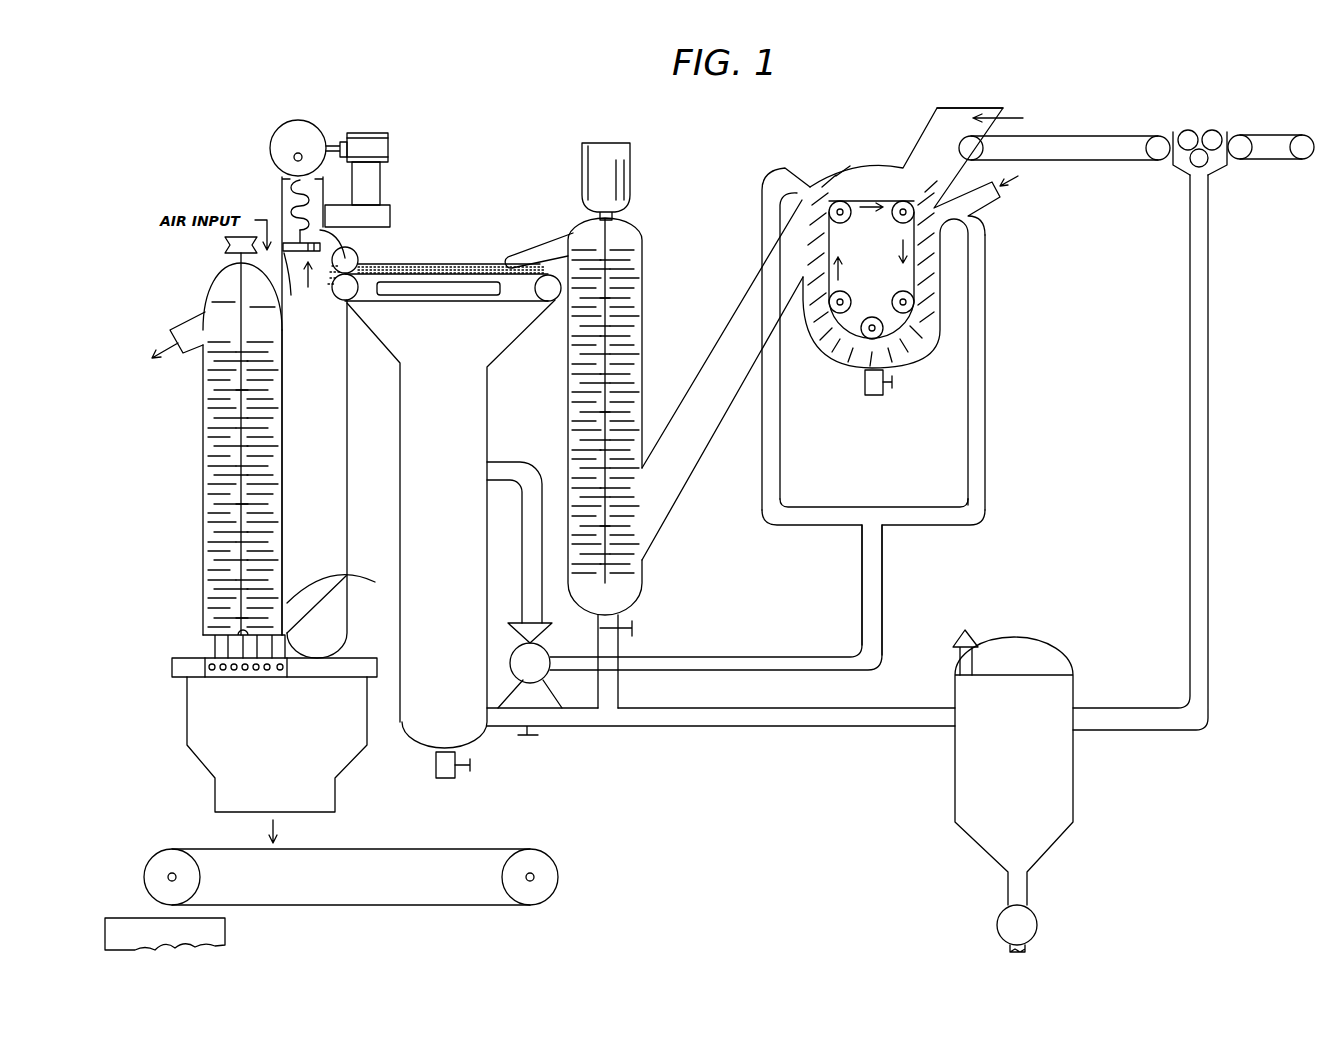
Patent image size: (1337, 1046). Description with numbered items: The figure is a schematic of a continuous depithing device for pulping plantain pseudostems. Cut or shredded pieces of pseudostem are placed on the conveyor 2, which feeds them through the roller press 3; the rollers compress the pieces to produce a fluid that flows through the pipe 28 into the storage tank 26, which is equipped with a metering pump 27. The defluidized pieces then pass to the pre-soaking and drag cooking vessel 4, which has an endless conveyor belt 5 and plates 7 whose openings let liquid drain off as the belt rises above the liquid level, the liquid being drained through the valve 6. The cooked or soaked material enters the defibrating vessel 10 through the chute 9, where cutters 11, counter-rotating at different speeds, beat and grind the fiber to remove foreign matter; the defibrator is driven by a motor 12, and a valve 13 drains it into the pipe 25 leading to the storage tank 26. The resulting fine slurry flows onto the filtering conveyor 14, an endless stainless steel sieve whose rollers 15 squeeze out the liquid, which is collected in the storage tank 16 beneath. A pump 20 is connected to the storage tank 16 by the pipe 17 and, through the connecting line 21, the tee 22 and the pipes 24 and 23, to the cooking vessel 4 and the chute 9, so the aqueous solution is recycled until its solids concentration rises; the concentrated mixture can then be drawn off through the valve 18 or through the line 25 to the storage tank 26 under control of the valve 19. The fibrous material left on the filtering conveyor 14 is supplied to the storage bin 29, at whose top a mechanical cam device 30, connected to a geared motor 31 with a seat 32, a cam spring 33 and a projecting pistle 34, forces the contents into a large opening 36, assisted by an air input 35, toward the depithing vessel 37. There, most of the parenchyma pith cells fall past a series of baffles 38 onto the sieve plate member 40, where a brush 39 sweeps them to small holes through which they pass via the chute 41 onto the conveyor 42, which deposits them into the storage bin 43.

The conveyor 2 is at (1267, 160).
The roller press 3 is at (1197, 130).
The pre-soaking and drag cooking vessel 4 is at (858, 166).
The endless conveyor belt 5 is at (828, 238).
The valve 6 is at (863, 380).
The plates 7 is at (840, 347).
The chute 9 is at (692, 470).
The defibrating vessel 10 is at (644, 368).
The cutters 11 is at (568, 369).
The motor 12 is at (632, 185).
The valve 13 is at (634, 626).
The filtering conveyor 14 is at (472, 263).
The rollers 15 is at (362, 258).
The storage tank 16 is at (486, 421).
The pipe 17 is at (521, 555).
The valve 18 is at (432, 762).
The valve 19 is at (553, 728).
The pump 20 is at (548, 675).
The recirculation line 21 is at (793, 652).
The tee 22 is at (878, 510).
The pipe 23 is at (781, 451).
The pipe 24 is at (986, 419).
The pipe 25 is at (724, 733).
The storage tank 26 is at (1076, 788).
The metering pump 27 is at (1040, 928).
The pipe 28 is at (1210, 410).
The storage bin 29 is at (348, 522).
The mechanical cam device 30 is at (288, 130).
The geared motor 31 is at (390, 153).
The seat 32 is at (392, 217).
The cam spring 33 is at (287, 195).
The projecting pistle 34 is at (292, 240).
The air input 35 is at (291, 297).
The opening 36 is at (344, 604).
The depithing vessel 37 is at (203, 490).
The baffles 38 is at (212, 547).
The brush 39 is at (205, 646).
The sieve plate member 40 is at (172, 668).
The chute 41 is at (187, 744).
The conveyor 42 is at (373, 906).
The storage bin 43 is at (228, 934).